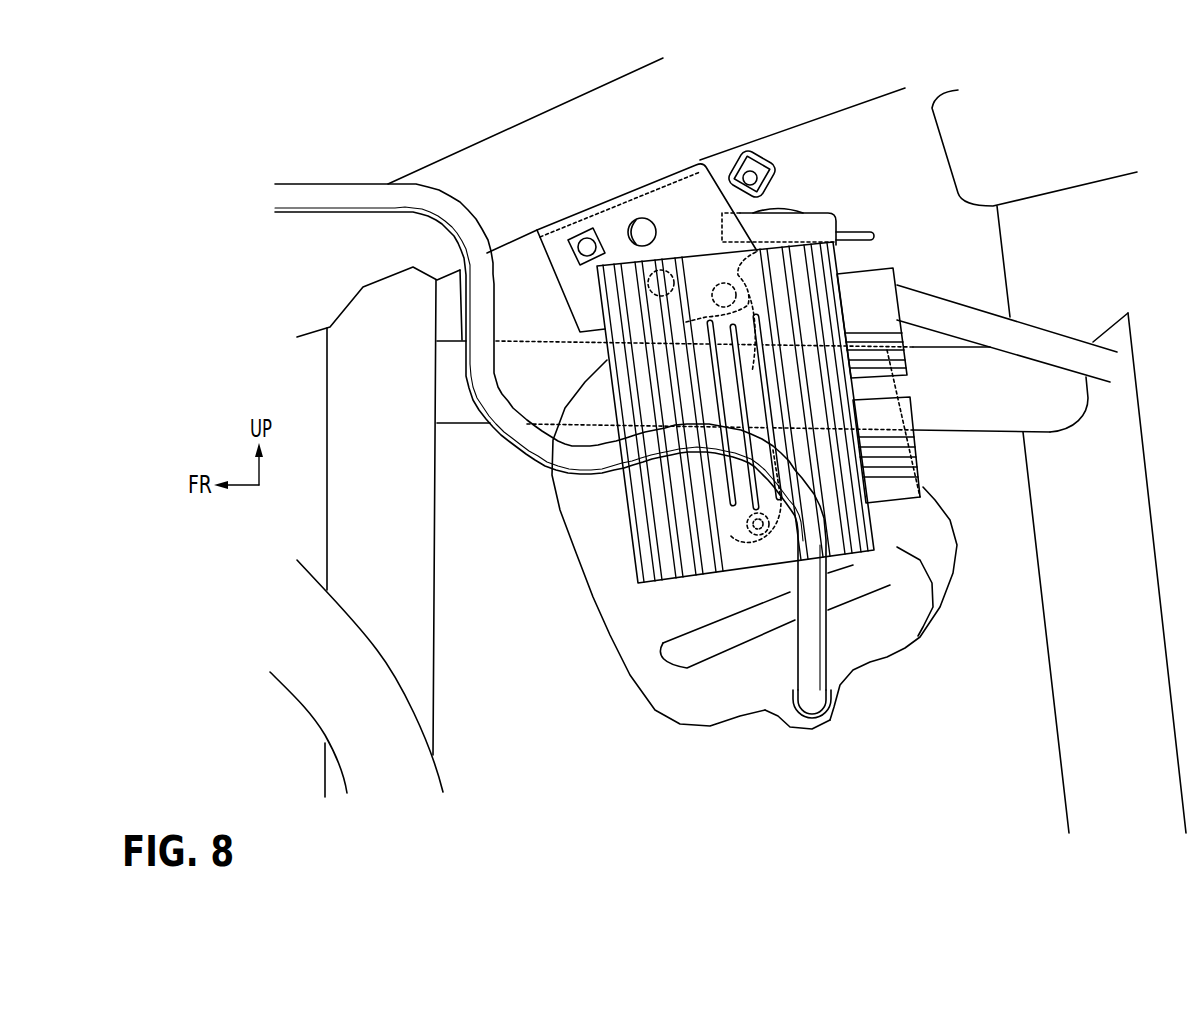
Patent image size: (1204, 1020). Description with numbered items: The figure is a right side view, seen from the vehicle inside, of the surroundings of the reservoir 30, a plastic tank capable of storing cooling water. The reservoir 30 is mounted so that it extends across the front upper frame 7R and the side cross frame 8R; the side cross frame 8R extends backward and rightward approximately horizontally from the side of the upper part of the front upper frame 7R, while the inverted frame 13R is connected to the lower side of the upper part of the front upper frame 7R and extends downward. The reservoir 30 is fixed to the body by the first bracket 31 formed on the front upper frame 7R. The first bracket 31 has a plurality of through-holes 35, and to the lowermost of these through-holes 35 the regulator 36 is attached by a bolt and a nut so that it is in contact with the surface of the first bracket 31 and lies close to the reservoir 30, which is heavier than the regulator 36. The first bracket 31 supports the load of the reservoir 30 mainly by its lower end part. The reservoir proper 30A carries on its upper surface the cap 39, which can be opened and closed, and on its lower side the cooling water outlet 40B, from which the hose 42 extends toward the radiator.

The front upper frame 7R is at (537, 140).
The side cross frame 8R is at (983, 412).
The inverted frame 13R is at (413, 620).
The reservoir 30 is at (688, 713).
The reservoir proper 30A is at (752, 688).
The first bracket 31 is at (700, 188).
The through-holes 35 is at (640, 218).
The regulator 36 is at (820, 383).
The cap 39 is at (812, 223).
The cooling water outlet 40B is at (832, 713).
The hose 42 is at (523, 442).